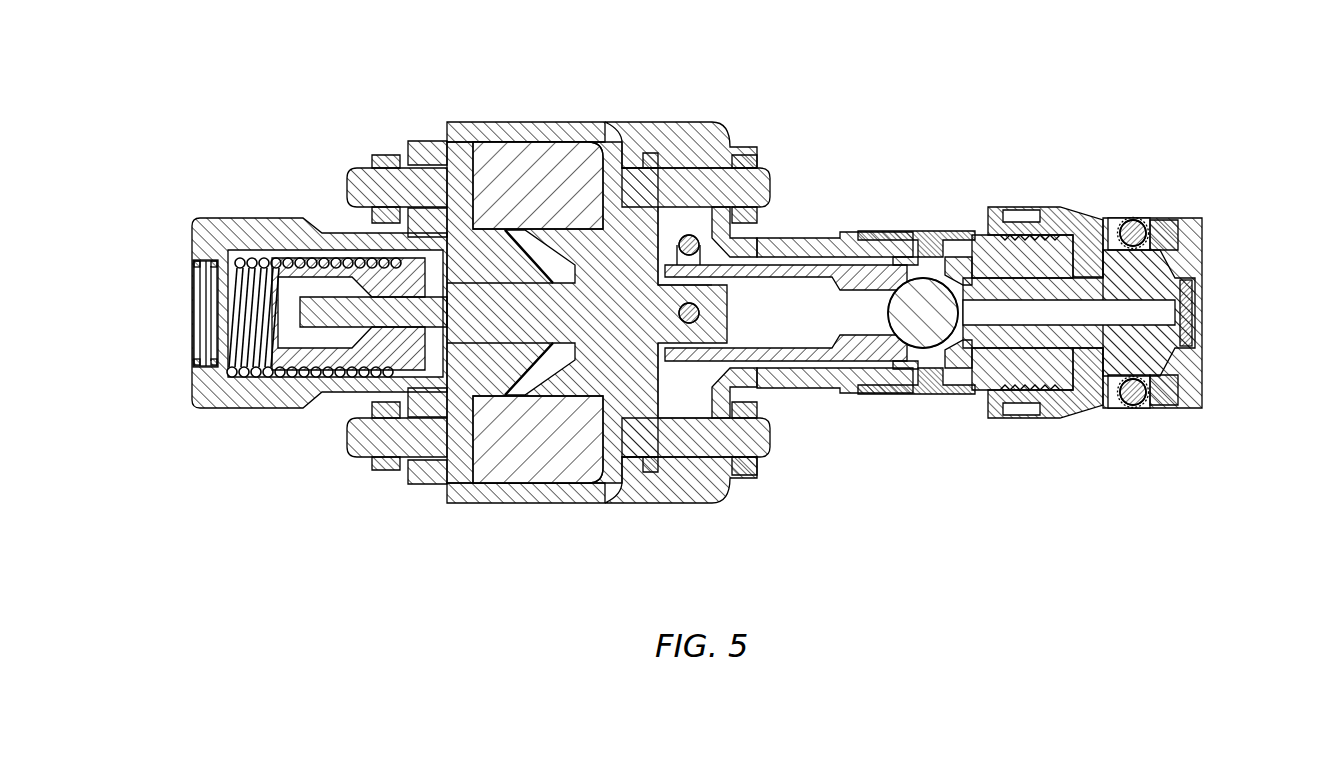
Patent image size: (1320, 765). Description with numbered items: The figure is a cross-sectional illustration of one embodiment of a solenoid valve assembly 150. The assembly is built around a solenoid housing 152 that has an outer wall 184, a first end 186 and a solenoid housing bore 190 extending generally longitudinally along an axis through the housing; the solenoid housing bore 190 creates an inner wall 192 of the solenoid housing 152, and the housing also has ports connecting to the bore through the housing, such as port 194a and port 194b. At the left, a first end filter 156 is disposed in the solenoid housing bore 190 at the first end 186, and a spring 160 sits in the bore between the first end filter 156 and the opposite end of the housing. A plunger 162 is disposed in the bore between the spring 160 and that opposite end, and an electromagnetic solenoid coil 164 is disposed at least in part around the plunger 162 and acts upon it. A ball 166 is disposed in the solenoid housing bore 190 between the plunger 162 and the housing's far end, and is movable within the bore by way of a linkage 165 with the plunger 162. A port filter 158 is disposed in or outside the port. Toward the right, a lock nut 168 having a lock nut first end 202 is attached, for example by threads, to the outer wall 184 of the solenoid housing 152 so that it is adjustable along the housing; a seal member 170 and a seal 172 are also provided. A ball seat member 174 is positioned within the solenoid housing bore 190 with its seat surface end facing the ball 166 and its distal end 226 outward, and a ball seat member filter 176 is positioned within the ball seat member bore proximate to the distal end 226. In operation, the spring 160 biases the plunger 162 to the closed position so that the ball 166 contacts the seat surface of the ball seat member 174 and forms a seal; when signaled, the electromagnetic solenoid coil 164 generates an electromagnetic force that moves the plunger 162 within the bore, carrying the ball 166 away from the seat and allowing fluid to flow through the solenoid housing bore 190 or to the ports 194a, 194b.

The solenoid valve assembly 150 is at (364, 58).
The solenoid housing 152 is at (724, 494).
The first end filter 156 is at (210, 330).
The port filter 158 is at (870, 237).
The spring 160 is at (271, 372).
The plunger 162 is at (592, 378).
The electromagnetic solenoid coil 164 is at (505, 475).
The linkage 165 is at (850, 378).
The ball 166 is at (919, 327).
The lock nut 168 is at (1080, 207).
The seal member 170 is at (1133, 405).
The seal 172 is at (1137, 220).
The ball seat member 174 is at (1199, 375).
The ball seat member filter 176 is at (1196, 316).
The outer wall 184 is at (538, 122).
The first end 186 is at (190, 248).
The solenoid housing bore 190 is at (688, 403).
The inner wall 192 is at (777, 246).
The port 194a is at (935, 382).
The port 194b is at (933, 240).
The lock nut first end 202 is at (987, 208).
The distal end 226 is at (1200, 272).